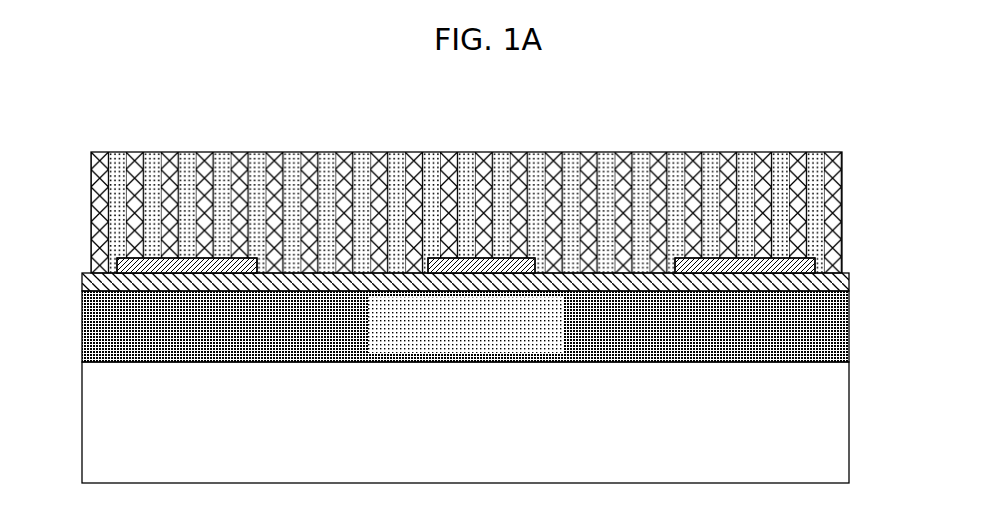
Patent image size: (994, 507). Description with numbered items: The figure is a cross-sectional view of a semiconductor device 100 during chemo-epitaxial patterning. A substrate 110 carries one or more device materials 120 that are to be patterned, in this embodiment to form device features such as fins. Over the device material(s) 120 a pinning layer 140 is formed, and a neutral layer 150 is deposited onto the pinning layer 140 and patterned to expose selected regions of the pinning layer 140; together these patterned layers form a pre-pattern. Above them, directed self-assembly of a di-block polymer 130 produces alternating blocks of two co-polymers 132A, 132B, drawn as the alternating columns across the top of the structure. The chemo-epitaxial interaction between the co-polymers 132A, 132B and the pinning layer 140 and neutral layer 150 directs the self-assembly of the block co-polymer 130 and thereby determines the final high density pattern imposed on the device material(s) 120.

The semiconductor device 100 is at (478, 279).
The substrate 110 is at (447, 446).
The device material(s) 120 is at (447, 350).
The di-block polymer 130 is at (466, 174).
The first co-polymer 132A is at (292, 150).
The second co-polymer 132B is at (380, 150).
The pinning layer 140 is at (90, 287).
The neutral layer 150 is at (122, 264).